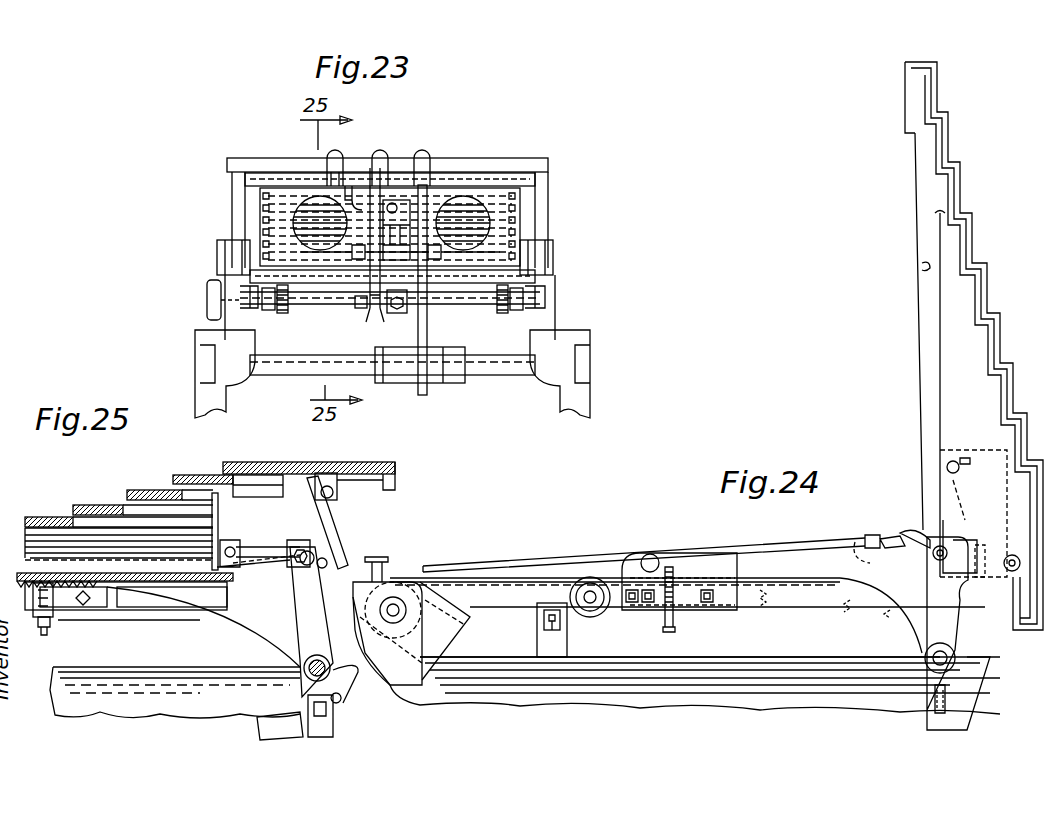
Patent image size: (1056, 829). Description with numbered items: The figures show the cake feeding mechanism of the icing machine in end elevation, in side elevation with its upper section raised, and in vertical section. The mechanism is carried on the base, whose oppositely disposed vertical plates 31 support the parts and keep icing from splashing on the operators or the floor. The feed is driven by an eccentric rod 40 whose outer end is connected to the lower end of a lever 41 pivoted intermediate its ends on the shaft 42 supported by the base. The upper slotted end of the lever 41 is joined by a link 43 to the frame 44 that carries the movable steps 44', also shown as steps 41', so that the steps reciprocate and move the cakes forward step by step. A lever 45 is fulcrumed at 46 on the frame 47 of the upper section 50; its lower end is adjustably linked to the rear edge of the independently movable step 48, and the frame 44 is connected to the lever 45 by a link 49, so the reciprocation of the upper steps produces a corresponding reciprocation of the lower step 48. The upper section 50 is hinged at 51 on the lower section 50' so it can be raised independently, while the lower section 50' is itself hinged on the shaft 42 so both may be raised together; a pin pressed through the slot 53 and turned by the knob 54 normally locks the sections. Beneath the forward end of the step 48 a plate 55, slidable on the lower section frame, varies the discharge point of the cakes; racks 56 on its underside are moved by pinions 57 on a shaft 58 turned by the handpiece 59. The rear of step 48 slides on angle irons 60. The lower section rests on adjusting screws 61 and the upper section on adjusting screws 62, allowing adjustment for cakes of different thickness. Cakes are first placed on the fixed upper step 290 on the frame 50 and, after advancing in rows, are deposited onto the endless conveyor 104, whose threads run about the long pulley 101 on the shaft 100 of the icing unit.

In FIG. 23, the vertical plates 31 is at (210, 398).
In FIG. 25, the vertical plates 31 is at (107, 700).
In FIG. 24, the vertical plates 31 is at (642, 688).
In FIG. 25, the eccentric rod 40 is at (265, 703).
In FIG. 23, the lever 41 is at (445, 296).
In FIG. 25, the lever 41 is at (299, 622).
In FIG. 24, the lever 41 is at (929, 623).
In FIG. 25, the movable steps 41' is at (154, 508).
In FIG. 23, the shaft 42 is at (283, 368).
In FIG. 25, the shaft 42 is at (305, 660).
In FIG. 24, the shaft 42 is at (938, 662).
In FIG. 23, the link 43 is at (413, 213).
In FIG. 25, the link 43 is at (280, 545).
In FIG. 24, the link 43 is at (977, 563).
In FIG. 23, the frame 44 is at (425, 227).
In FIG. 25, the frame 44 is at (125, 555).
In FIG. 24, the frame 44 is at (946, 497).
In FIG. 24, the movable steps 44' is at (974, 346).
In FIG. 23, the lever 45 is at (350, 180).
In FIG. 25, the lever 45 is at (336, 530).
In FIG. 23, the fulcrum 46 is at (413, 195).
In FIG. 25, the fulcrum 46 is at (337, 505).
In FIG. 24, the fulcrum 46 is at (1010, 556).
In FIG. 23, the frame 47 is at (548, 165).
In FIG. 25, the frame 47 is at (395, 470).
In FIG. 24, the frame 47 is at (1030, 505).
In FIG. 23, the step 48 is at (470, 295).
In FIG. 25, the step 48 is at (155, 595).
In FIG. 24, the step 48 is at (586, 552).
In FIG. 23, the link 49 is at (380, 297).
In FIG. 25, the link 49 is at (245, 548).
In FIG. 24, the link 49 is at (935, 482).
In FIG. 24, the upper section 50 is at (931, 355).
In FIG. 24, the lower section 50' is at (702, 617).
In FIG. 23, the hinge 51 is at (238, 257).
In FIG. 25, the hinge 51 is at (333, 563).
In FIG. 24, the hinge 51 is at (933, 553).
In FIG. 24, the slot 53 is at (920, 268).
In FIG. 24, the operating handle or knob 54 is at (649, 556).
In FIG. 24, the plate 55 is at (533, 572).
In FIG. 23, the racks 56 is at (287, 288).
In FIG. 25, the racks 56 is at (60, 605).
In FIG. 23, the pinions 57 is at (283, 313).
In FIG. 23, the shaft 58 is at (340, 304).
In FIG. 23, the handpiece 59 is at (208, 310).
In FIG. 23, the angle irons 60 is at (258, 287).
In FIG. 25, the angle irons 60 is at (120, 600).
In FIG. 24, the angle irons 60 is at (482, 596).
In FIG. 24, the adjusting screws 61 is at (547, 633).
In FIG. 25, the adjusting screws 62 is at (50, 635).
In FIG. 24, the adjusting screws 62 is at (676, 629).
In FIG. 24, the shaft 100 is at (394, 600).
In FIG. 24, the long pulley 101 is at (407, 590).
In FIG. 24, the endless conveyor 104 is at (381, 578).
In FIG. 24, the fixed upper step 290 is at (1032, 482).